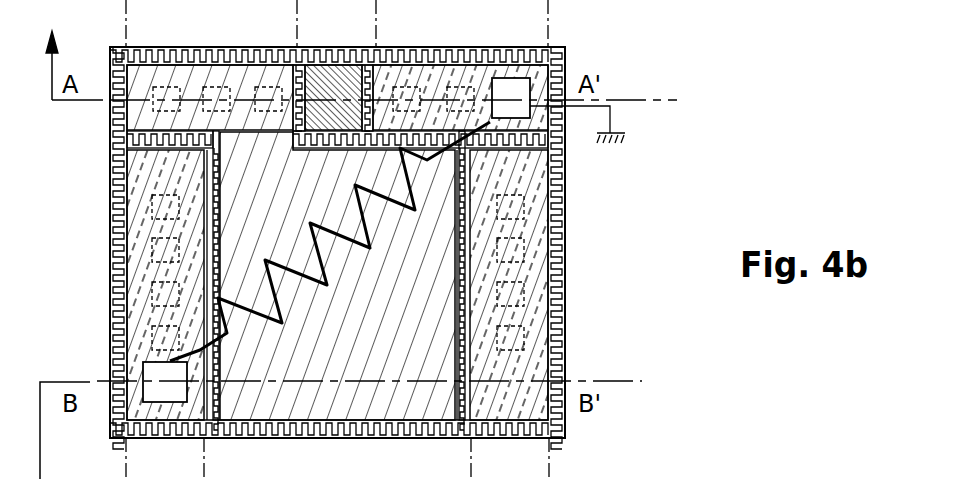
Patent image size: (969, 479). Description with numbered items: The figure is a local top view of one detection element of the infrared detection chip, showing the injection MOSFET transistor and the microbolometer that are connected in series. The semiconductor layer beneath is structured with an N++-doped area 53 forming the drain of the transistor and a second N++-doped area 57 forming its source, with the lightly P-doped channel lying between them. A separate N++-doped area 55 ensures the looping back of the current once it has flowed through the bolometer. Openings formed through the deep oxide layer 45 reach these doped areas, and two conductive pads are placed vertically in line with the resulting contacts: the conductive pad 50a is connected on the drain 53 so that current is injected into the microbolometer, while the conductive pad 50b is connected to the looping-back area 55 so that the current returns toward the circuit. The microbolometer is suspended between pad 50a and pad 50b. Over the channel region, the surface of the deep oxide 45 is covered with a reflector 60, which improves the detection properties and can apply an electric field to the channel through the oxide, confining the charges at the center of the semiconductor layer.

The deep oxide layer 45 is at (113, 263).
The N++-doped area 53 is at (135, 182).
The N++-doped area 55 is at (540, 45).
The second N++-doped area 57 is at (538, 273).
The reflector 60 is at (128, 115).
The conductive pad 50a is at (180, 356).
The conductive pad 50b is at (518, 119).